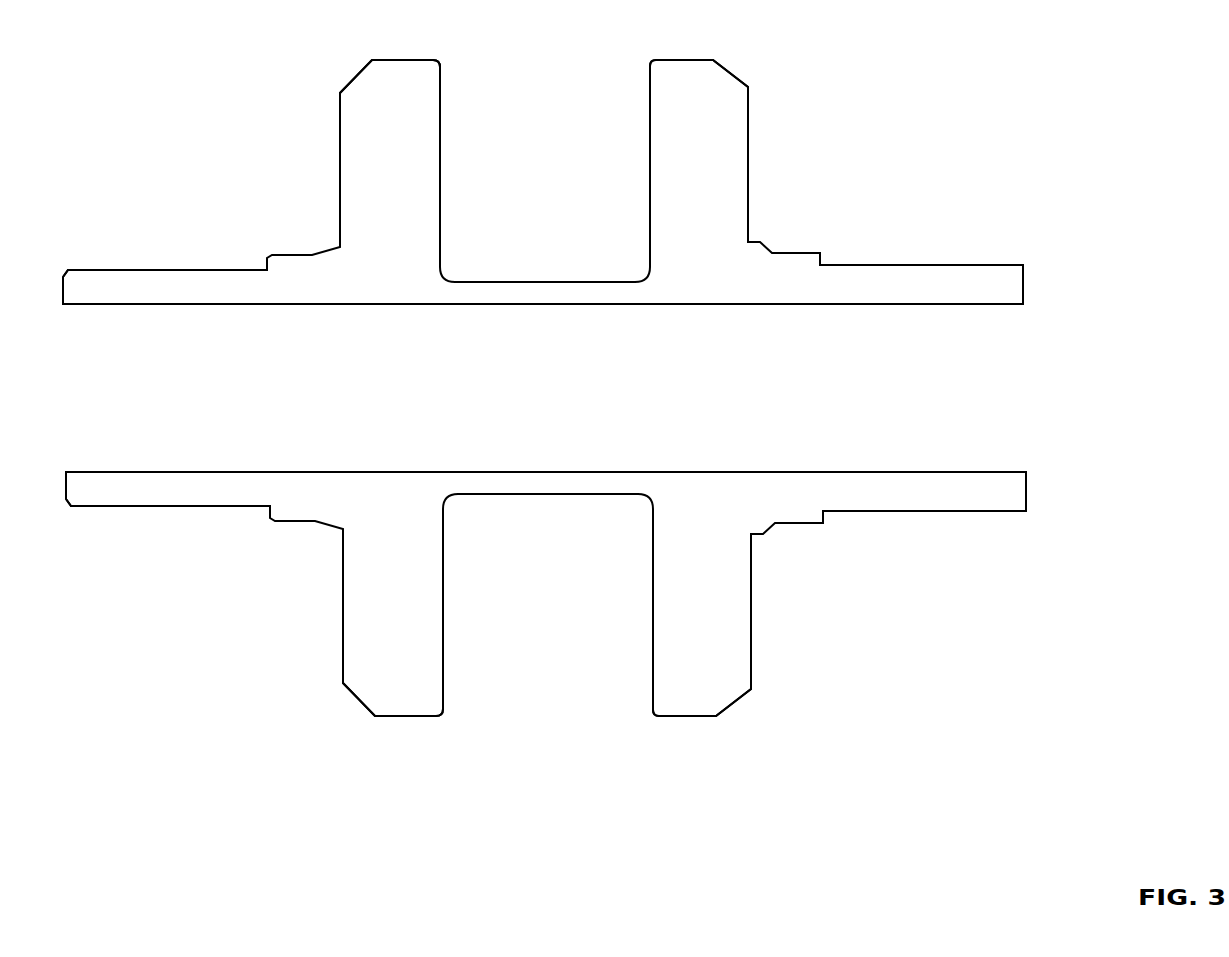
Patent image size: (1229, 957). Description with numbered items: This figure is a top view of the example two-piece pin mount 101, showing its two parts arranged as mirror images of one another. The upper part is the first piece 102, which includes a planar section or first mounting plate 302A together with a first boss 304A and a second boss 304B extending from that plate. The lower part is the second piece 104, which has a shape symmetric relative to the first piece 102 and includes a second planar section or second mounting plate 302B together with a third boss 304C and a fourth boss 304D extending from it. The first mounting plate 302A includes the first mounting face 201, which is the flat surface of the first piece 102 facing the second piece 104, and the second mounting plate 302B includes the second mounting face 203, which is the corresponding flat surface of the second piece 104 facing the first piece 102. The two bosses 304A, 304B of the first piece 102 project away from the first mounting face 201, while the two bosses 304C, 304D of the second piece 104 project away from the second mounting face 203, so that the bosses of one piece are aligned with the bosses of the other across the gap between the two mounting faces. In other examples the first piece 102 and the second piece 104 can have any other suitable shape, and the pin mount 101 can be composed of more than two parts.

The pin mount 101 is at (1005, 73).
The first piece 102 is at (941, 264).
The second piece 104 is at (970, 471).
The first mounting face 201 is at (295, 306).
The second mounting face 203 is at (295, 470).
The first mounting plate 302A is at (136, 269).
The second mounting plate 302B is at (136, 507).
The first boss 304A is at (408, 60).
The second boss 304B is at (687, 60).
The third boss 304C is at (408, 717).
The fourth boss 304D is at (687, 717).